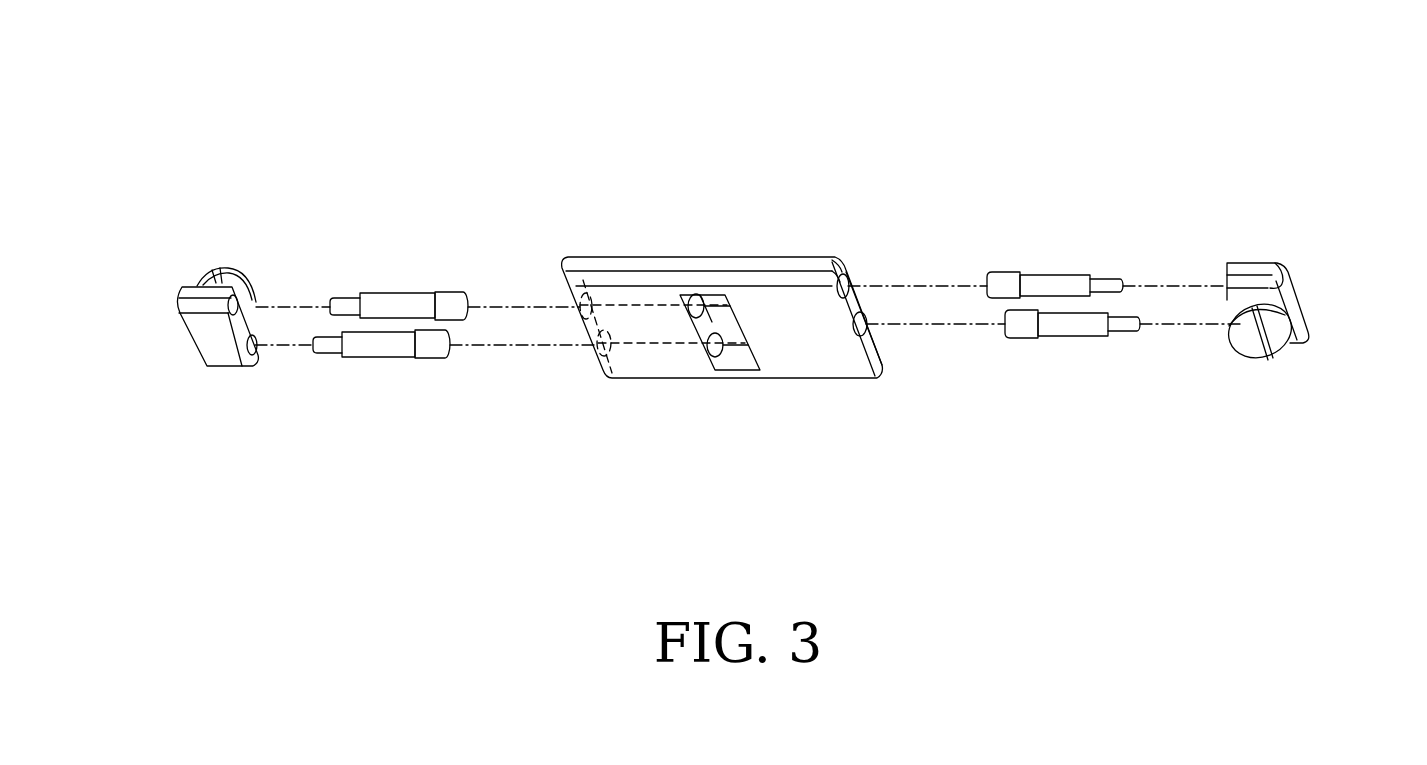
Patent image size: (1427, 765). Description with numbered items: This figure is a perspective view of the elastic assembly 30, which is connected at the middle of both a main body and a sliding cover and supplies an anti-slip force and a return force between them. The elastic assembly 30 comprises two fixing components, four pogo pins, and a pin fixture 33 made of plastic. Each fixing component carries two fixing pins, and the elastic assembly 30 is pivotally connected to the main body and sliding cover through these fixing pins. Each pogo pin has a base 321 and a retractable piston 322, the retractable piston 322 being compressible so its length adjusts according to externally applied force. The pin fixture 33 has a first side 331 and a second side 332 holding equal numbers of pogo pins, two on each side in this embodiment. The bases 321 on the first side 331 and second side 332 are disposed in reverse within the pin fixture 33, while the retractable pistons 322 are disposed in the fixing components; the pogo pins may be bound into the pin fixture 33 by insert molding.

The elastic assembly 30 is at (178, 87).
The base 321 is at (1005, 272).
The retractable piston 322 is at (1108, 279).
The pin fixture 33 is at (703, 257).
The first side 331 is at (878, 358).
The second side 332 is at (562, 277).